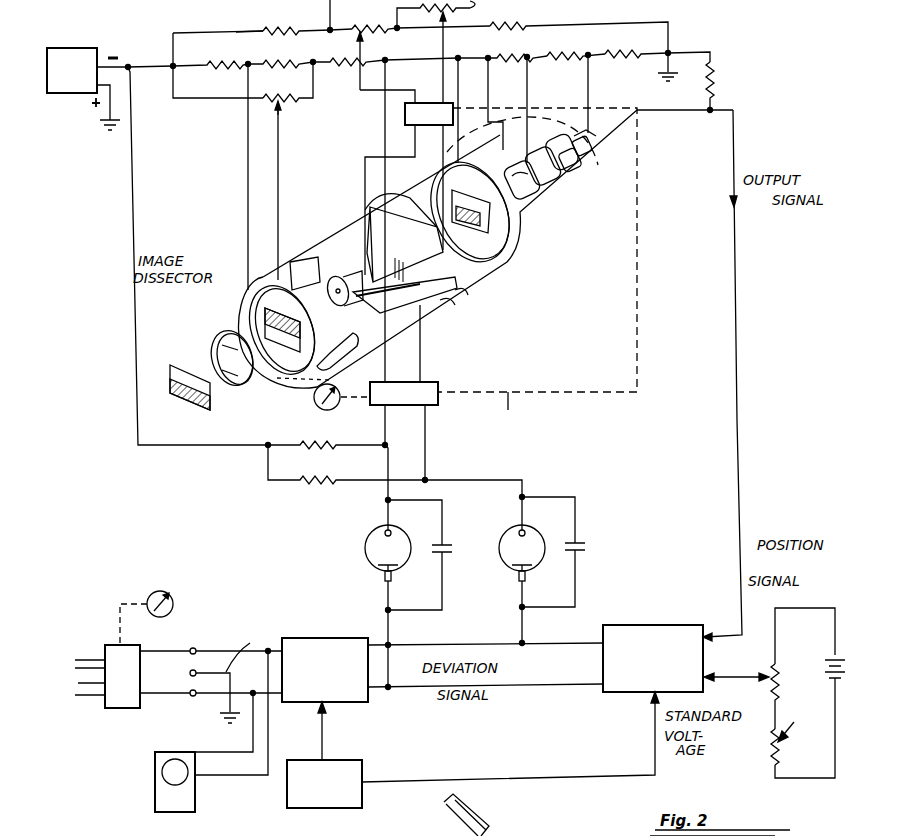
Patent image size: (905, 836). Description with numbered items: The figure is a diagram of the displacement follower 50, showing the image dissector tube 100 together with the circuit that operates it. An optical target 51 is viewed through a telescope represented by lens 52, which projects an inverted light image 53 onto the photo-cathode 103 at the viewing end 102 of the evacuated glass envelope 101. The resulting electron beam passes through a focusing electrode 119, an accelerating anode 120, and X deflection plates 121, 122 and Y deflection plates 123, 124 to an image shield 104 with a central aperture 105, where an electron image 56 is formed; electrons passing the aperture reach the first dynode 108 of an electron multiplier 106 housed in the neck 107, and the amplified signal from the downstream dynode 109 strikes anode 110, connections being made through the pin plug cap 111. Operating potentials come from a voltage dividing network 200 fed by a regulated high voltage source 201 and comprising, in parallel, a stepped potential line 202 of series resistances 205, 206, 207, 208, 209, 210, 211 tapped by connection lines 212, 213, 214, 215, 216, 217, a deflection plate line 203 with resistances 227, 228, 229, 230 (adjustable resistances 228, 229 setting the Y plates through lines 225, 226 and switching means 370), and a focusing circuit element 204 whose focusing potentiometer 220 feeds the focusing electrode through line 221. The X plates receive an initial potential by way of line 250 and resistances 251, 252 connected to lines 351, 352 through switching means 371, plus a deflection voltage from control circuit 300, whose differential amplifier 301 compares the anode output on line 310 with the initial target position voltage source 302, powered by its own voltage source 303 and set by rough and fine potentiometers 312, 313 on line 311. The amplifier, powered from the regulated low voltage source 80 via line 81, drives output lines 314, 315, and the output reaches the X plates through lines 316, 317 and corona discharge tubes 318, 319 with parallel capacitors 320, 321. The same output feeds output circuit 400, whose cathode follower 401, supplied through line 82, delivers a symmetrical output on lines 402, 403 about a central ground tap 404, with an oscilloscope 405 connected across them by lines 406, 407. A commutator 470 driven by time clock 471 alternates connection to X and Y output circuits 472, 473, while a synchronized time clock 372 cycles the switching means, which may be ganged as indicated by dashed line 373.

The displacement follower 50 is at (551, 282).
The optical target 51 is at (210, 410).
The telescope lens 52 is at (222, 346).
The inverted light image 53 is at (300, 328).
The electron image 56 is at (478, 235).
The regulated low voltage power source 80 is at (364, 780).
The line 81 is at (447, 781).
The line 82 is at (325, 730).
The image dissector tube 100 is at (236, 283).
The evacuated glass envelope 101 is at (247, 277).
The viewing end 102 is at (278, 380).
The photo-cathode 103 is at (253, 310).
The image shield 104 is at (500, 262).
The central aperture 105 is at (508, 232).
The electron multiplier 106 is at (528, 200).
The neck 107 is at (553, 194).
The first dynode 108 is at (557, 188).
The downstream dynode 109 is at (567, 168).
The anode 110 is at (572, 148).
The multiple pin plug cap 111 is at (598, 138).
The focusing electrode 119 is at (296, 257).
The accelerating anode 120 is at (428, 312).
The lower X deflection plate 121 is at (452, 300).
The upper X deflection plate 122 is at (404, 238).
The right Y deflection plate 123 is at (470, 290).
The left Y deflection plate 124 is at (336, 277).
The voltage dividing network 200 is at (718, 42).
The regulated high voltage source 201 is at (83, 47).
The stepped rising potential line 202 is at (182, 38).
The deflection plate line 203 is at (236, 31).
The focusing potentiometer circuit element 204 is at (204, 99).
The resistance 205 is at (209, 64).
The resistance 206 is at (263, 63).
The resistance 207 is at (348, 58).
The resistance 208 is at (525, 52).
The resistance 209 is at (546, 55).
The resistance 210 is at (636, 36).
The resistance 211 is at (714, 76).
The circuit connection line 212 is at (248, 150).
The circuit connection line 213 is at (385, 125).
The circuit connection line 214 is at (459, 99).
The circuit connection line 215 is at (529, 99).
The circuit connection line 216 is at (590, 95).
The circuit connection line 217 is at (660, 112).
The focusing potentiometer 220 is at (282, 111).
The line 221 is at (278, 163).
The line 225 is at (403, 90).
The line 226 is at (444, 48).
The resistance 227 is at (300, 31).
The adjustable resistance 228 is at (385, 27).
The adjustable resistance 229 is at (451, 14).
The resistance 230 is at (518, 24).
The line 250 is at (133, 223).
The resistance 251 is at (343, 447).
The resistance 252 is at (298, 484).
The deflection control circuit 300 is at (618, 622).
The differential amplifier 301 is at (649, 664).
The initial target position voltage source 302 is at (818, 592).
The voltage source 303 is at (822, 686).
The line 310 is at (738, 237).
The line 311 is at (735, 681).
The rough adjustment potentiometer 312 is at (770, 668).
The fine adjusting potentiometer 313 is at (775, 736).
The output line 314 is at (586, 640).
The output line 315 is at (585, 668).
The line 316 is at (522, 633).
The line 317 is at (392, 636).
The corona discharge tube 318 is at (512, 571).
The corona discharge tube 319 is at (379, 571).
The capacitor 320 is at (579, 552).
The capacitor 321 is at (446, 554).
The line 351 is at (385, 425).
The line 352 is at (425, 425).
The switching means 370 is at (429, 114).
The switching means 371 is at (404, 393).
The time clock means 372 is at (325, 410).
The dashed line 373 is at (507, 413).
The output circuit 400 is at (229, 638).
The cathode follower 401 is at (336, 624).
The output line 402 is at (214, 650).
The output line 403 is at (209, 697).
The central ground tap 404 is at (246, 648).
The oscilloscope 405 is at (185, 812).
The line 406 is at (224, 752).
The line 407 is at (230, 777).
The commutator 470 is at (127, 688).
The time clock means 471 is at (167, 594).
The X output circuit 472 is at (80, 658).
The Y output circuit 473 is at (90, 698).